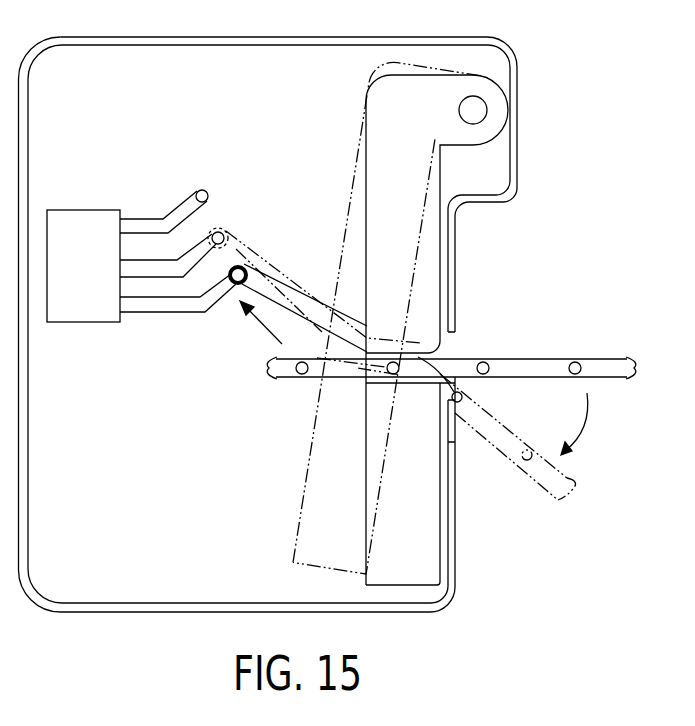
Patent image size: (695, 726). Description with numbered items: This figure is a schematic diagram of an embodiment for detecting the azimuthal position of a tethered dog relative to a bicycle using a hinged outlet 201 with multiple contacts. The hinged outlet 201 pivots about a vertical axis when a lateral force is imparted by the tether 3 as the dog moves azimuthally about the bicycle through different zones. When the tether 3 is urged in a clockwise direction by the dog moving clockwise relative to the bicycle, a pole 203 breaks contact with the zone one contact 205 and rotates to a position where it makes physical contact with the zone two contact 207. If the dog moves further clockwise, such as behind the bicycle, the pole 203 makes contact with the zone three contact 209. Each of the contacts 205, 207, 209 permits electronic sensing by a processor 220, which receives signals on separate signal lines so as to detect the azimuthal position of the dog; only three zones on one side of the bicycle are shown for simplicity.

The tether 3 is at (603, 358).
The hinged outlet 201 is at (475, 109).
The pole 203 is at (302, 296).
The zone 1 contact 205 is at (217, 305).
The zone 2 contact 207 is at (226, 233).
The zone 3 contact 209 is at (163, 218).
The processor (CPU) 220 is at (83, 323).